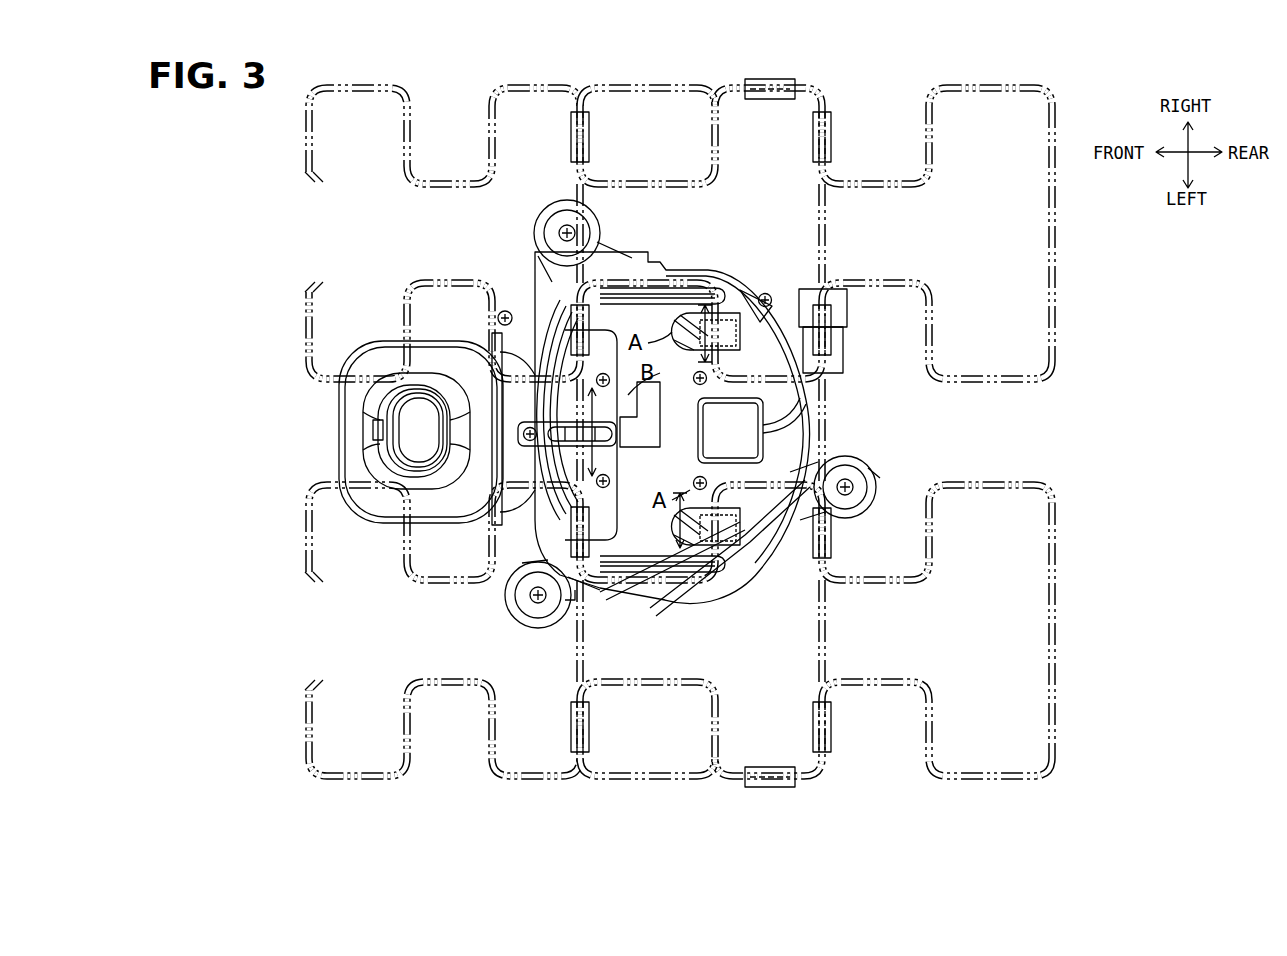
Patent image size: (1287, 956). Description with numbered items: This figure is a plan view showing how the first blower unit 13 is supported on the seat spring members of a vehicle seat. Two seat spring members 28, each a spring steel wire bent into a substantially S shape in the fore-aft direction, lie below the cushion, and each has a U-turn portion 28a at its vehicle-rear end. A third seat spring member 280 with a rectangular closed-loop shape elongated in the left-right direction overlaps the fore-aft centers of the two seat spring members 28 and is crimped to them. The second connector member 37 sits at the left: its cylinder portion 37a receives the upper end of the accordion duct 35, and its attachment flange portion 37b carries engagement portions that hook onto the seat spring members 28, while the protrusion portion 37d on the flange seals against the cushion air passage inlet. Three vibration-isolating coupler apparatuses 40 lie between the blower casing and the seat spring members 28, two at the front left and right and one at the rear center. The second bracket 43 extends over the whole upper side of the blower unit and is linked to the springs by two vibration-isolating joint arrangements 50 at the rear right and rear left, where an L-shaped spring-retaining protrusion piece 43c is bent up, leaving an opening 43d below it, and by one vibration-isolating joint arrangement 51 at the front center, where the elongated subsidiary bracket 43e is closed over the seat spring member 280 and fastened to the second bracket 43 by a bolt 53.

The first blower unit 13 is at (755, 602).
The seat spring member 28 is at (414, 100).
The U-turn portion 28a is at (1058, 262).
The seat spring member 280 is at (648, 782).
The accordion duct 35 is at (388, 408).
The second connector member 37 is at (370, 429).
The cylinder portion 37a is at (392, 478).
The attachment flange portion 37b is at (356, 395).
The protrusion portion 37d is at (373, 430).
The vibration-isolating coupler apparatus 40 is at (536, 198).
The second bracket 43 is at (660, 588).
The spring-retaining protrusion piece 43c is at (722, 322).
The opening 43d is at (700, 325).
The subsidiary bracket 43e is at (618, 560).
The vibration-isolating joint arrangement 50 is at (733, 318).
The vibration-isolating joint arrangement 51 is at (528, 442).
The bolt 53 is at (498, 316).